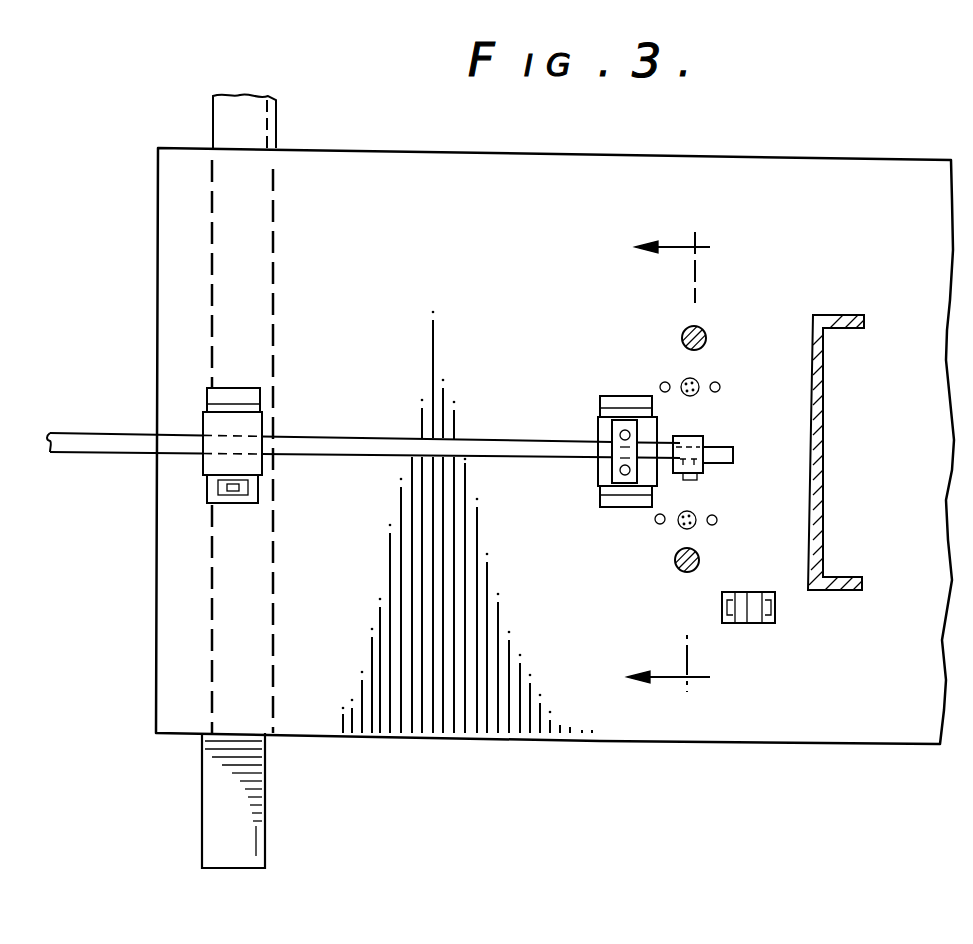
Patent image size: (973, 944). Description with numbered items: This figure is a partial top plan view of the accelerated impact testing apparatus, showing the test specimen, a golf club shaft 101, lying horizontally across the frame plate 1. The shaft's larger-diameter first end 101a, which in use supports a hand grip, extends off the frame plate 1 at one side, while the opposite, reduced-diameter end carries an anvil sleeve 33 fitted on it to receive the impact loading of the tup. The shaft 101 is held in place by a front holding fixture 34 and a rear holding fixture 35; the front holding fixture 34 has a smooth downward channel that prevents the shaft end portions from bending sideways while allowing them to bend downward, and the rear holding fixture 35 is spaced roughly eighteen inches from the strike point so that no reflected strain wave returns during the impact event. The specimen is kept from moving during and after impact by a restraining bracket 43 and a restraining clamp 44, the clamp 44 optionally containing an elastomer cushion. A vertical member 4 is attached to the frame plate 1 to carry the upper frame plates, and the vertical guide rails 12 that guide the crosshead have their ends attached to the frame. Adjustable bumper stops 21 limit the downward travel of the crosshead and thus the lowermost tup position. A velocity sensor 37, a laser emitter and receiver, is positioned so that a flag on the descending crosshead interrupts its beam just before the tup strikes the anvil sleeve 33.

The frame plate 1 is at (818, 157).
The vertical member 4 is at (824, 407).
The vertical guide rails 12 is at (704, 334).
The adjustable bumper stops 21 is at (682, 384).
The anvil sleeve 33 is at (701, 438).
The front holding fixture 34 is at (598, 476).
The rear holding fixture 35 is at (205, 487).
The velocity sensor 37 is at (776, 607).
The restraining bracket 43 is at (598, 426).
The restraining clamp 44 is at (208, 418).
The golf club shaft 101 is at (336, 436).
The first end 101a is at (208, 797).